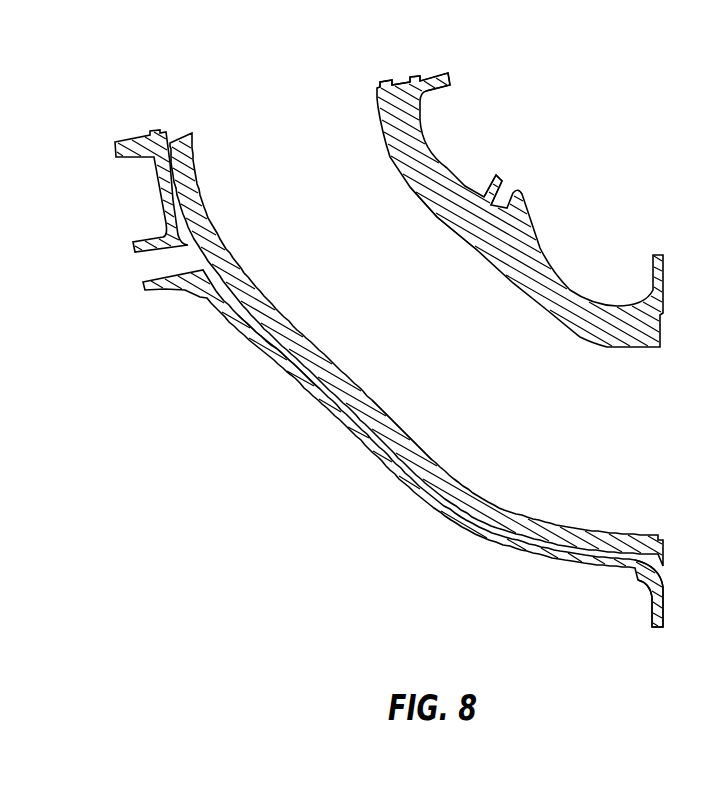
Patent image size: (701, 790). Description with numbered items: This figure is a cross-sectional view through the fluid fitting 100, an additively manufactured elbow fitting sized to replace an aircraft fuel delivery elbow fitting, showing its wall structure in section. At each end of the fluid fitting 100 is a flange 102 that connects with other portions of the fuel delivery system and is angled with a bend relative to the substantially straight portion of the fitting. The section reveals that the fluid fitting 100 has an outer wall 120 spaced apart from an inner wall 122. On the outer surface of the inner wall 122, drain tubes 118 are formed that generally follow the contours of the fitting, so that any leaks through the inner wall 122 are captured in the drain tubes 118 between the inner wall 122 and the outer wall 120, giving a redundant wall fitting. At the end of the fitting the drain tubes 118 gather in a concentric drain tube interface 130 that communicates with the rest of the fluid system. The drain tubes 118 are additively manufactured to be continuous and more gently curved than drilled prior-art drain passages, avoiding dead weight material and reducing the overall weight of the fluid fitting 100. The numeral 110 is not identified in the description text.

The fluid fitting 100 is at (568, 150).
The flange 102 is at (435, 75).
The inner ring member 110 is at (148, 268).
The drain tubes 118 is at (263, 342).
The outer wall 120 is at (446, 168).
The inner wall 122 is at (490, 266).
The concentric drain tube interface 130 is at (166, 130).